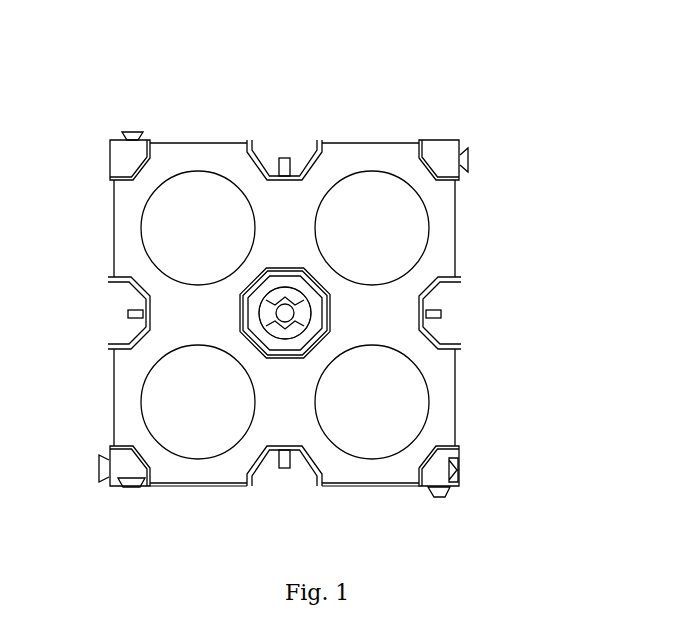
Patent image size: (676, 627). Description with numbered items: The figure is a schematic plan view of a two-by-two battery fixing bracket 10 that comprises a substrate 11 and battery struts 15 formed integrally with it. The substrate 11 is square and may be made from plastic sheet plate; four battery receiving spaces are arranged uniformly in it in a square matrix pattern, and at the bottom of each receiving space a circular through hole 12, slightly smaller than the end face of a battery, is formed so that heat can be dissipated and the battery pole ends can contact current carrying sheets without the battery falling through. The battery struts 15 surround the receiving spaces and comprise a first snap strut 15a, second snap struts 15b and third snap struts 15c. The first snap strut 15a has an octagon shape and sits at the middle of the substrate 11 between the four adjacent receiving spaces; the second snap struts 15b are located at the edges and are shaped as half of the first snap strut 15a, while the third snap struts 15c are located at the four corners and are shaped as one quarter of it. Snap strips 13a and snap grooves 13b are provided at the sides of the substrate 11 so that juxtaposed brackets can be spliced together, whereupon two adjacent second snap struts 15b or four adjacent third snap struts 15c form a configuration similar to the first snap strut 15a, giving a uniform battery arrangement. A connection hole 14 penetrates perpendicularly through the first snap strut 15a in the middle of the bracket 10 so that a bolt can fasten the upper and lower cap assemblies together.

The battery fixing bracket 10 is at (282, 32).
The substrate 11 is at (271, 201).
The through hole 12 is at (185, 395).
The snap strip 13a is at (440, 497).
The snap groove 13b is at (456, 470).
The connection hole 14 is at (285, 313).
The battery struts 15 is at (547, 150).
The first snap strut 15a is at (318, 315).
The second snap strut 15b is at (442, 299).
The third snap strut 15c is at (443, 162).